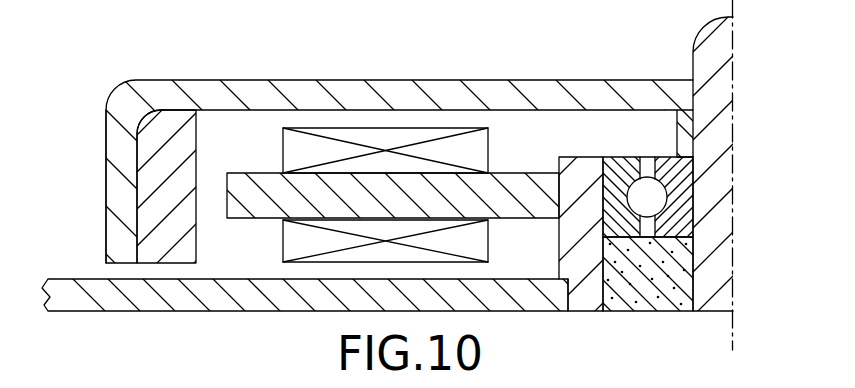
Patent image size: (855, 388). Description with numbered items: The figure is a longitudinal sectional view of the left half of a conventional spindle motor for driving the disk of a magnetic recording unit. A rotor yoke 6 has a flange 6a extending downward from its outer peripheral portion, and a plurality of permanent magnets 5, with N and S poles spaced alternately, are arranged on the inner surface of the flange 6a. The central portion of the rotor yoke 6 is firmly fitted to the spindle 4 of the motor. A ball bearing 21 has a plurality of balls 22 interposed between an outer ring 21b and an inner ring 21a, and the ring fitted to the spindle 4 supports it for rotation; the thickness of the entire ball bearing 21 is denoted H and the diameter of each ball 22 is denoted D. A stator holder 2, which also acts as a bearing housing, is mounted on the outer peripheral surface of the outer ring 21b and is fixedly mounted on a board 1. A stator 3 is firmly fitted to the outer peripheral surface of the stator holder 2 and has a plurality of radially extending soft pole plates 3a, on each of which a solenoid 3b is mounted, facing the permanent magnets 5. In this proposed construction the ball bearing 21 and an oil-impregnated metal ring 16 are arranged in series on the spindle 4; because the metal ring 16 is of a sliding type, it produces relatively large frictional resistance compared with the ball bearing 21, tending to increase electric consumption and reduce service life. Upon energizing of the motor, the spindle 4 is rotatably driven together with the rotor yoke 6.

The board 1 is at (217, 298).
The stator holder 2 is at (570, 157).
The stator 3 is at (390, 144).
The soft pole plate 3a is at (240, 173).
The solenoid 3b is at (389, 137).
The spindle 4 is at (727, 56).
The permanent magnet 5 is at (150, 152).
The rotor yoke 6 is at (345, 80).
The flange 6a is at (113, 196).
The oil-impregnated metal ring 16 is at (658, 312).
The ball bearing 21 is at (652, 150).
The inner ring 21a is at (687, 188).
The outer ring 21b is at (618, 163).
The ball 22 is at (654, 204).